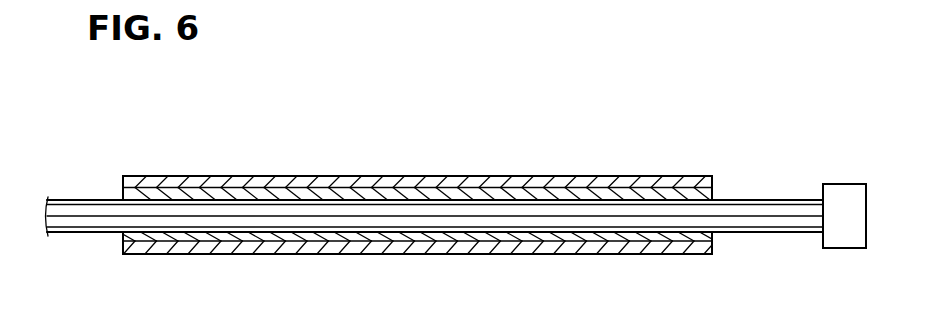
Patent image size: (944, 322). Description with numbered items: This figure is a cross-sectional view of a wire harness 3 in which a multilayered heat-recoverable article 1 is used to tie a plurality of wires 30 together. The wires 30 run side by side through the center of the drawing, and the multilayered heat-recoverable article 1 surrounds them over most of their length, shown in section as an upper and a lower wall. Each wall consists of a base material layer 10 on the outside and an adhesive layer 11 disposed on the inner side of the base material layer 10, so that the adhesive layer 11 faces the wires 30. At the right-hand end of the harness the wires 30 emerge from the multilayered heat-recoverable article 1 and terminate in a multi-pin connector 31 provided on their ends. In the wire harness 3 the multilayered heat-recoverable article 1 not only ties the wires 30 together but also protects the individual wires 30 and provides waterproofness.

The multilayered heat-recoverable article 1 is at (473, 177).
The wire harness 3 is at (555, 161).
The base material layer 10 is at (380, 188).
The adhesive layer 11 is at (292, 197).
The wires 30 is at (382, 230).
The multi-pin connector 31 is at (842, 197).